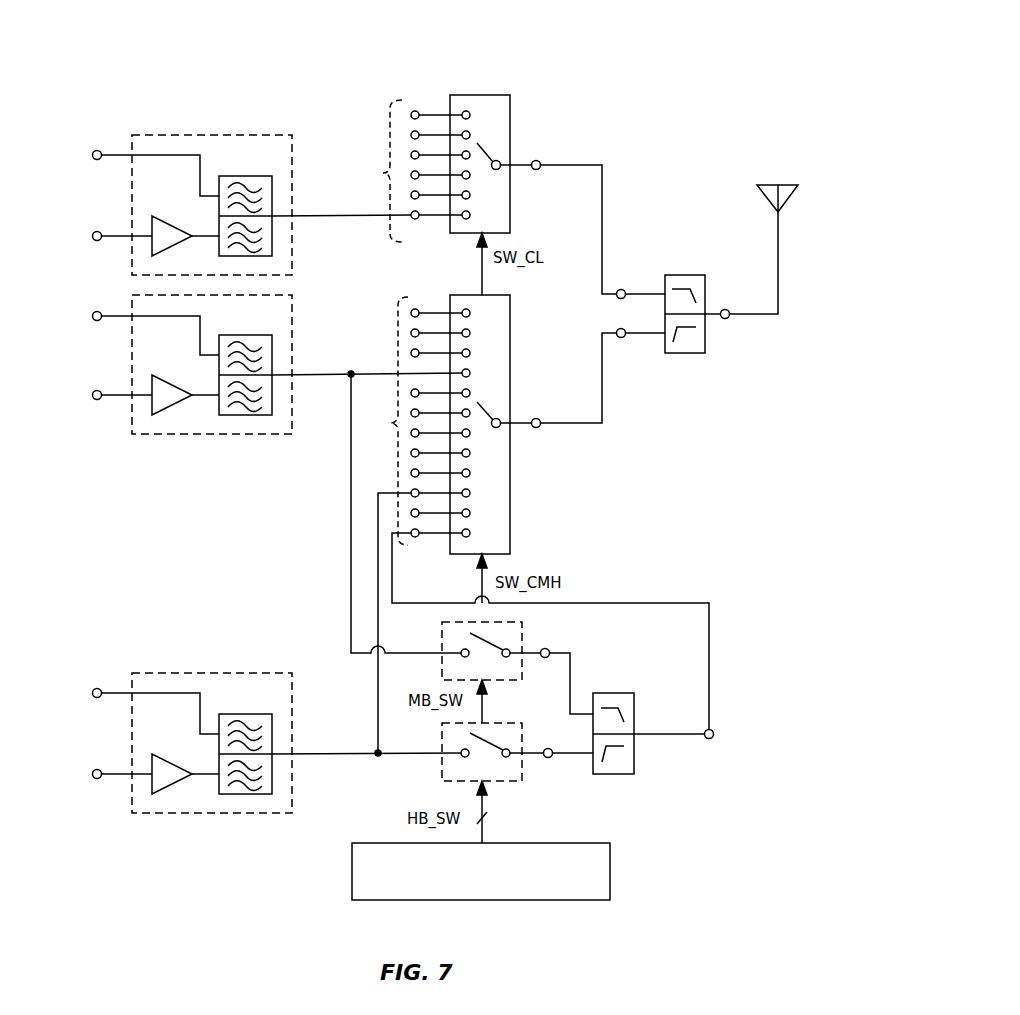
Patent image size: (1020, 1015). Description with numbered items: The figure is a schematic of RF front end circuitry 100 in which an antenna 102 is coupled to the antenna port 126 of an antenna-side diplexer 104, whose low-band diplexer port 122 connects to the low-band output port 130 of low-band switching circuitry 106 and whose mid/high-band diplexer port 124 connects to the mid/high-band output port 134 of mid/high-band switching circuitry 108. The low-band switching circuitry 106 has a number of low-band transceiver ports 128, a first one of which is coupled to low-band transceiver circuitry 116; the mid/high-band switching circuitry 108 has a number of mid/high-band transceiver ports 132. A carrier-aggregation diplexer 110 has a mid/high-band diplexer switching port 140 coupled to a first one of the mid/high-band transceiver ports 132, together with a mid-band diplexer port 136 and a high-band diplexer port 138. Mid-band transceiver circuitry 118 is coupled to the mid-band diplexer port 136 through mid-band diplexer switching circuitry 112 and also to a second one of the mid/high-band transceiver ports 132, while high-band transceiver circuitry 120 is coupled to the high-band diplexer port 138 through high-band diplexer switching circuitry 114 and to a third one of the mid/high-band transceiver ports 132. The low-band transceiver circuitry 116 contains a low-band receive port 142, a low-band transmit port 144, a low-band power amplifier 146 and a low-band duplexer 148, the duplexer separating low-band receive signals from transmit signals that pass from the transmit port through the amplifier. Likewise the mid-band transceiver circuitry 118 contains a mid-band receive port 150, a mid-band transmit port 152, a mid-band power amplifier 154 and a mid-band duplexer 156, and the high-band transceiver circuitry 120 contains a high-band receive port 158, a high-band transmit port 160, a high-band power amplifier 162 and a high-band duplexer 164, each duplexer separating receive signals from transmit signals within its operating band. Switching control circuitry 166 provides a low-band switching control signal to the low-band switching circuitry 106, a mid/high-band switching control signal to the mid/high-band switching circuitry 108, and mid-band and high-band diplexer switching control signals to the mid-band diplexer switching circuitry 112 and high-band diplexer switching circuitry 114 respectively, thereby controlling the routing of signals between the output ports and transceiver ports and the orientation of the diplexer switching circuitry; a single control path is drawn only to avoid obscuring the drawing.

The RF front end circuitry 100 is at (598, 42).
The antenna 102 is at (787, 185).
The antenna-side diplexer 104 is at (680, 353).
The low-band switching circuitry 106 is at (449, 155).
The mid/high-band switching circuitry 108 is at (453, 413).
The carrier-aggregation diplexer 110 is at (615, 774).
The mid-band diplexer switching circuitry 112 is at (522, 633).
The high-band diplexer switching circuitry 114 is at (522, 742).
The low-band transceiver circuitry 116 is at (233, 135).
The mid-band transceiver circuitry 118 is at (250, 434).
The high-band transceiver circuitry 120 is at (233, 673).
The low-band diplexer port 122 is at (621, 289).
The mid/high-band diplexer port 124 is at (621, 338).
The antenna port 126 is at (725, 309).
The low-band transceiver ports 128 is at (387, 171).
The low-band output port 130 is at (536, 160).
The mid/high-band transceiver ports 132 is at (388, 421).
The mid/high-band output port 134 is at (536, 418).
The mid-band diplexer port 136 is at (545, 658).
The high-band diplexer port 138 is at (548, 758).
The mid/high-band diplexer switching port 140 is at (709, 739).
The low-band receive port 142 is at (92, 154).
The low-band transmit port 144 is at (92, 234).
The low-band power amplifier 146 is at (168, 217).
The low-band duplexer 148 is at (238, 176).
The mid-band receive port 150 is at (92, 314).
The mid-band transmit port 152 is at (92, 393).
The mid-band power amplifier 154 is at (168, 376).
The mid-band duplexer 156 is at (238, 335).
The high-band receive port 158 is at (92, 691).
The high-band transmit port 160 is at (92, 772).
The high-band power amplifier 162 is at (168, 755).
The high-band duplexer 164 is at (238, 714).
The switching control circuitry 166 is at (481, 871).